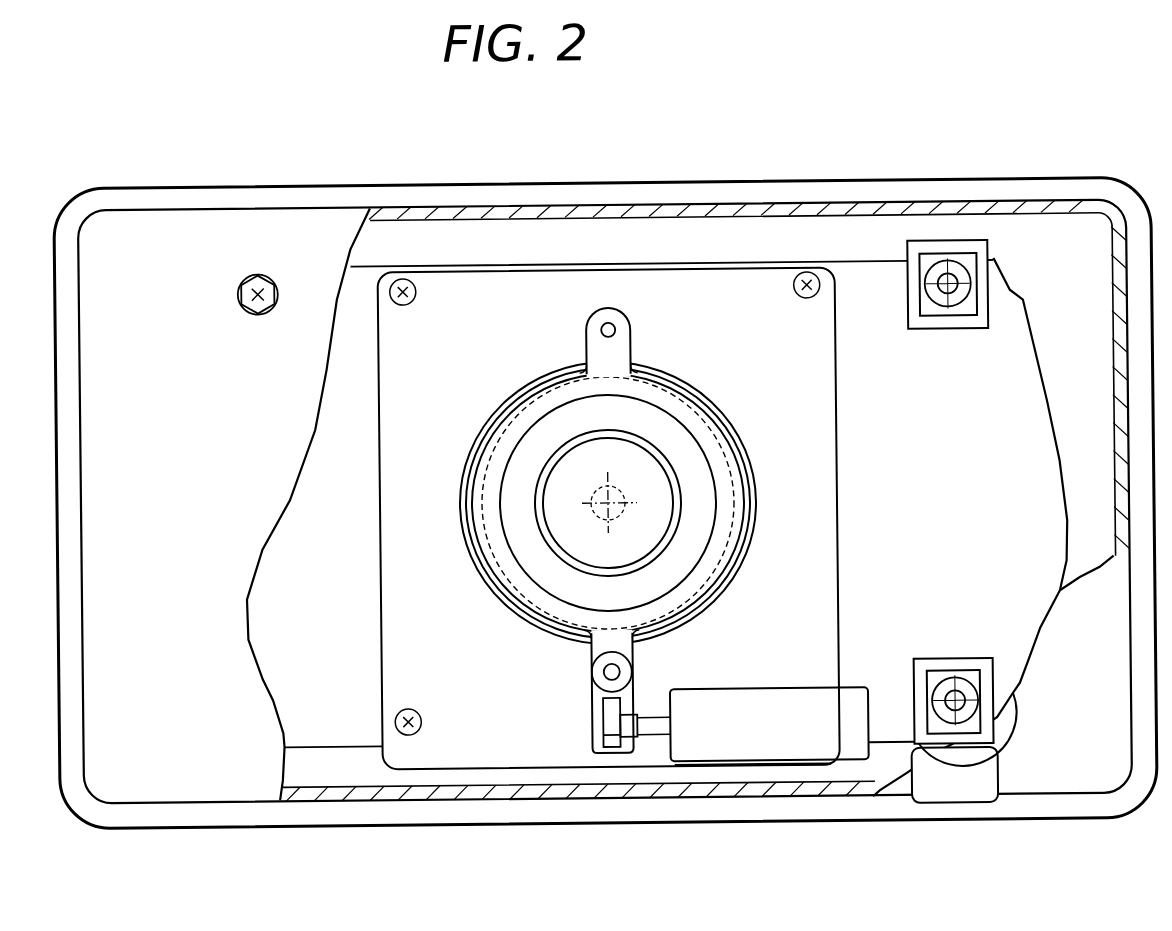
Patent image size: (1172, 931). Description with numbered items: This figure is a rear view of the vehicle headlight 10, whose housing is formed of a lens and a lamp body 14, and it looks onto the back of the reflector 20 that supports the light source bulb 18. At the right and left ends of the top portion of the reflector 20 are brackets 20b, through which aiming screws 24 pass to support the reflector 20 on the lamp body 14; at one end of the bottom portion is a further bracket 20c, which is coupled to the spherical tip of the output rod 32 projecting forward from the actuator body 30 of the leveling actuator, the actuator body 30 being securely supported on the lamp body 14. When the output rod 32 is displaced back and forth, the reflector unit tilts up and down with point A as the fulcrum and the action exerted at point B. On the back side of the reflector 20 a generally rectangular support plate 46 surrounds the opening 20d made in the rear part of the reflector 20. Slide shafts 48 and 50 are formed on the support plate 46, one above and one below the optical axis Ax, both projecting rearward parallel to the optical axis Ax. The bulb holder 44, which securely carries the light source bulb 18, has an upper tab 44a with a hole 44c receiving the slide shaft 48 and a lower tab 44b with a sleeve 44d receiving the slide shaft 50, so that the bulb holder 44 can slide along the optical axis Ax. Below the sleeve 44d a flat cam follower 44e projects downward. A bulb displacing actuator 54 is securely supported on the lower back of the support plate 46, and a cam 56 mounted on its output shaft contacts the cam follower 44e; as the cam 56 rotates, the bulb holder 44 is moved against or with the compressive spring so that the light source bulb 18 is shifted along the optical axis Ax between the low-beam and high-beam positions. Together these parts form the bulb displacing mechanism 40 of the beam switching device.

The vehicle headlight 10 is at (224, 161).
The lamp body 14 is at (765, 180).
The light source bulb 18 is at (590, 483).
The optical axis Ax is at (598, 518).
The reflector 20 is at (1029, 301).
The bracket 20b is at (919, 331).
The bracket 20c is at (938, 668).
The opening 20d is at (694, 389).
The aiming screw 24 is at (254, 308).
The actuator body 30 is at (1005, 719).
The output rod 32 is at (960, 694).
The bulb displacing mechanism 40 is at (569, 778).
The bulb holder 44 is at (745, 429).
The upper tab 44a is at (599, 351).
The lower tab 44b is at (603, 648).
The hole 44c is at (599, 332).
The sleeve 44d is at (599, 680).
The cam follower 44e is at (592, 720).
The support plate 46 is at (838, 467).
The slide shaft 48 is at (615, 323).
The slide shaft 50 is at (615, 672).
The bulb displacing actuator 54 is at (786, 680).
The cam 56 is at (610, 740).
The point A is at (922, 306).
The point B is at (933, 694).